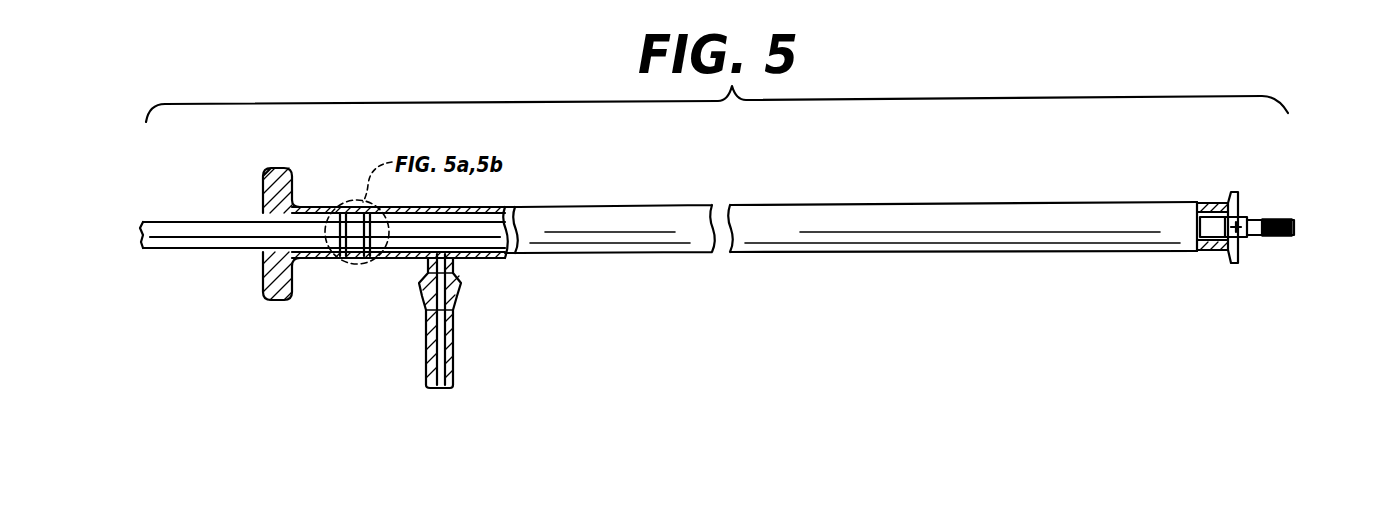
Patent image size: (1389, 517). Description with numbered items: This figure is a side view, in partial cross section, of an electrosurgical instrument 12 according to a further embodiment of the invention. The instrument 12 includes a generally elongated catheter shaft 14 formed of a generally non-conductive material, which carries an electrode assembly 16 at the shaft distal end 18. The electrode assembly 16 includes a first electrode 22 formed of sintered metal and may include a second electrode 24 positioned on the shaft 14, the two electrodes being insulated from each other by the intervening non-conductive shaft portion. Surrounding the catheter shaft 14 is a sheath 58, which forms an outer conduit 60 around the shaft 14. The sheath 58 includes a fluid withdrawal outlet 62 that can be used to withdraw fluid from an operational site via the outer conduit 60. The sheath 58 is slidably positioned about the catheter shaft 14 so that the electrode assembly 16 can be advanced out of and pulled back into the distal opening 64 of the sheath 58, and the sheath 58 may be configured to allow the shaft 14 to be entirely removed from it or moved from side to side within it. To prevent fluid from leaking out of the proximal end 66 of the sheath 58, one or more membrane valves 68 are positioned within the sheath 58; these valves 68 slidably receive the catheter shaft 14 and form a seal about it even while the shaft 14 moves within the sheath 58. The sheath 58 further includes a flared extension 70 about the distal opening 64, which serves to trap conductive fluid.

The electrosurgical instrument 12 is at (988, 152).
The catheter shaft 14 is at (1202, 208).
The electrode assembly 16 is at (1258, 238).
The shaft distal end 18 is at (1295, 231).
The first electrode 22 is at (1290, 218).
The second electrode 24 is at (1248, 216).
The sheath 58 is at (837, 204).
The outer conduit 60 is at (490, 258).
The fluid withdrawal outlet 62 is at (462, 312).
The distal opening 64 is at (1237, 256).
The proximal end 66 is at (262, 250).
The membrane valves 68 is at (366, 258).
The flared extension 70 is at (1230, 194).